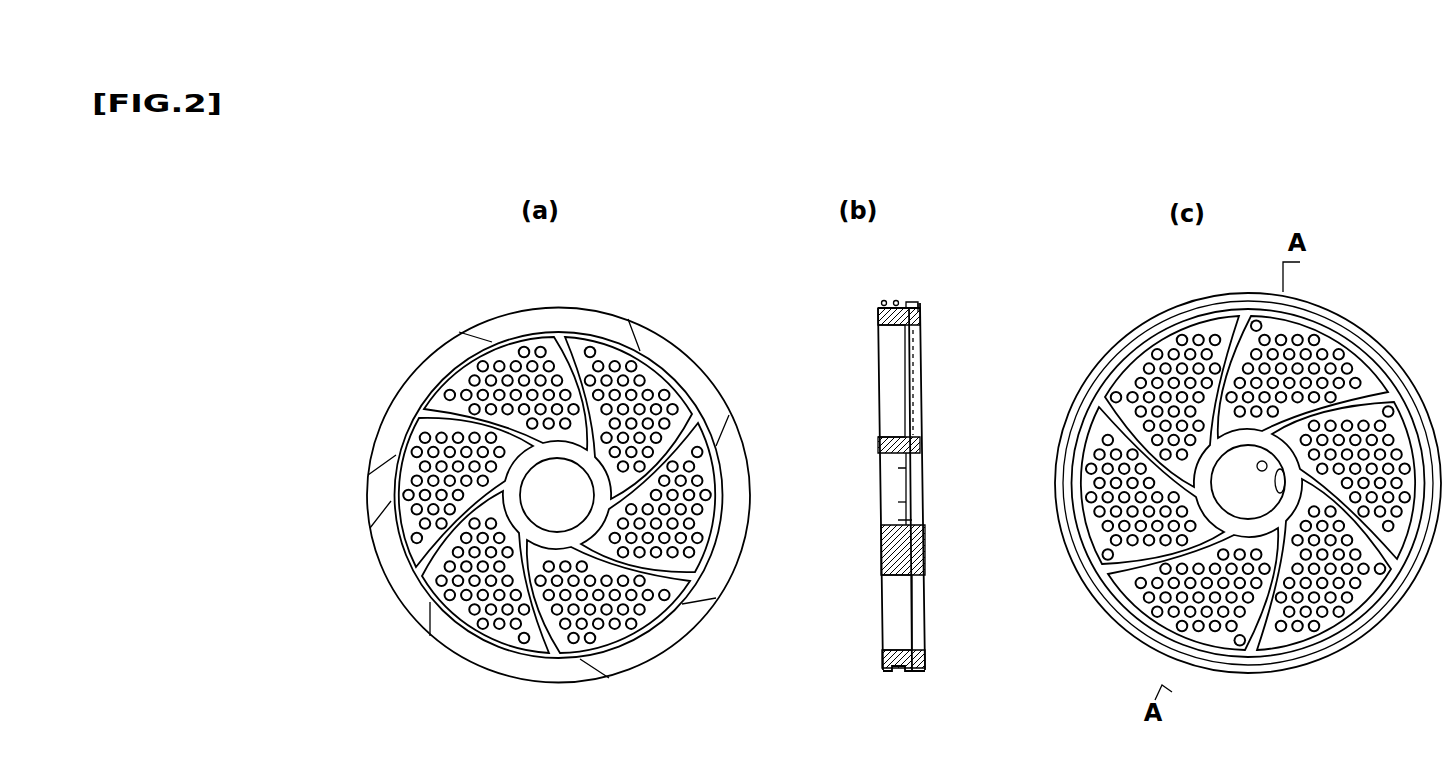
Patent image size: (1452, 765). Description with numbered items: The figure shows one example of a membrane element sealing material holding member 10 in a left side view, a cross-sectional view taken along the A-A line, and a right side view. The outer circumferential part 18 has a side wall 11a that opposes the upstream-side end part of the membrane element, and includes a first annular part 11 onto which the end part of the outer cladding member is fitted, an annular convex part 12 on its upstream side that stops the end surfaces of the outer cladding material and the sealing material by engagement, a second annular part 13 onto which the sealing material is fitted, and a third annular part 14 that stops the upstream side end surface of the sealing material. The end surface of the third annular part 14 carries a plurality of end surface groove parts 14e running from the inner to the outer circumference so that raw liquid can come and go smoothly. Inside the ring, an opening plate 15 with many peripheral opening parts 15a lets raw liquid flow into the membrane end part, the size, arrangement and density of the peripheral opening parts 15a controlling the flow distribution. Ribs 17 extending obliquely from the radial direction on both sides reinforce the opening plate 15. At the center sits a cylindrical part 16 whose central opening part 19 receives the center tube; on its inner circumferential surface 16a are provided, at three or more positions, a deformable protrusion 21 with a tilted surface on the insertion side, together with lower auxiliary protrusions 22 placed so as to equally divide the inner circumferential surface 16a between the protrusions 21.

The sealing material holding member 10 is at (732, 392).
The first annular part 11 is at (916, 308).
The side wall 11a is at (920, 312).
The annular convex part 12 is at (903, 305).
The second annular part 13 is at (888, 304).
The third annular part 14 is at (690, 369).
The end surface groove part 14e is at (463, 334).
The opening plate 15 is at (714, 457).
The peripheral opening part 15a is at (728, 470).
The cylindrical part 16 is at (552, 460).
The inner circumferential surface 16a is at (888, 520).
The rib 17 is at (712, 421).
The outer circumferential part 18 is at (692, 340).
The central opening part 19 is at (871, 478).
The protrusion 21 is at (1350, 664).
The auxiliary protrusion 22 is at (553, 460).